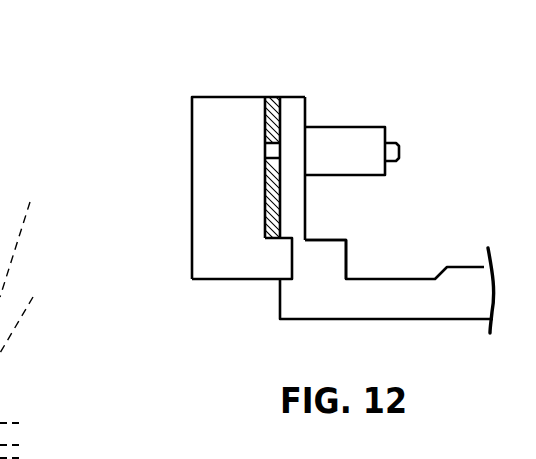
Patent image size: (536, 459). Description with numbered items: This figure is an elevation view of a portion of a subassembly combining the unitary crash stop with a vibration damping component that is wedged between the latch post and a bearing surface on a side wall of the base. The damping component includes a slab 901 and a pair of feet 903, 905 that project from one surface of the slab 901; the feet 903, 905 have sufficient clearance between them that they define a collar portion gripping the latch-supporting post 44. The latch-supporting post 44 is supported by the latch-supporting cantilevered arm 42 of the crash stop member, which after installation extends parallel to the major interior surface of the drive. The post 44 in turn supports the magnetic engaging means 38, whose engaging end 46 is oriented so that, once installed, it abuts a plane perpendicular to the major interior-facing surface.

The slab 901 is at (222, 107).
The latch-supporting post 44 is at (293, 97).
The foot 903 is at (268, 262).
The foot 905 is at (348, 253).
The magnetic engaging means 38 is at (343, 127).
The engaging end 46 is at (400, 151).
The latch-supporting cantilevered arm 42 is at (463, 278).